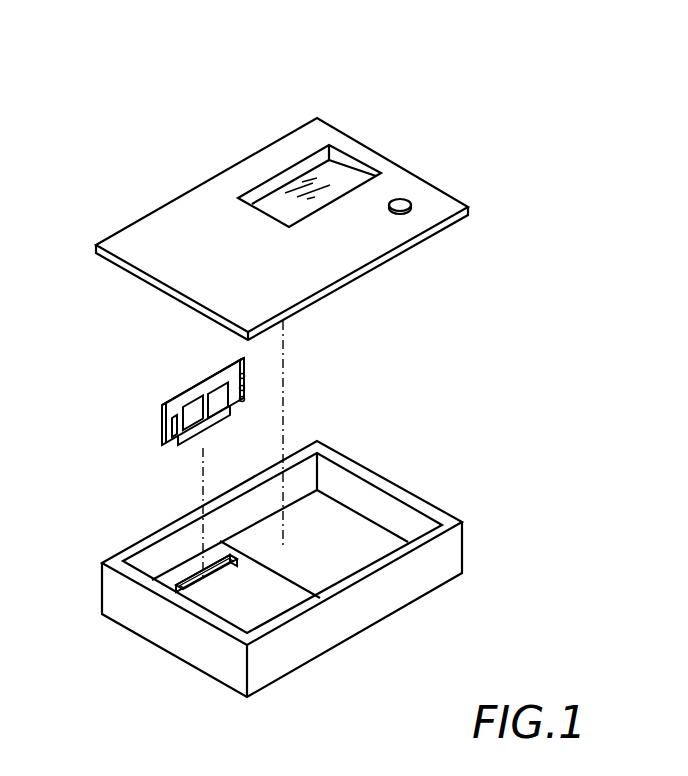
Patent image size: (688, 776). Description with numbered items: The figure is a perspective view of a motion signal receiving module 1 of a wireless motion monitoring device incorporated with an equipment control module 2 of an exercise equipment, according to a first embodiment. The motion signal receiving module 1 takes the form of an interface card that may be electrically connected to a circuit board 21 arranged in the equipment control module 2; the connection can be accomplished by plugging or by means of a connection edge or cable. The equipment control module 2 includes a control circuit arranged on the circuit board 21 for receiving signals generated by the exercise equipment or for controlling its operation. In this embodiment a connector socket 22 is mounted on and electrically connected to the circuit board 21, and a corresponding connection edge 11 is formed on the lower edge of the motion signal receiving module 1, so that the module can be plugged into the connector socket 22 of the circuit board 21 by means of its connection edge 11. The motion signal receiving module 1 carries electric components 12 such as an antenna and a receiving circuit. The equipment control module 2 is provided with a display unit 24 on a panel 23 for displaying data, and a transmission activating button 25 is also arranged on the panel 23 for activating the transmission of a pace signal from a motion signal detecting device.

The motion signal receiving module 1 is at (142, 423).
The connection edge 11 is at (192, 443).
The electric components 12 is at (193, 418).
The equipment control module 2 is at (427, 575).
The circuit board 21 is at (263, 607).
The connector socket 22 is at (177, 585).
The panel 23 is at (147, 240).
The display unit 24 is at (333, 177).
The transmission activating button 25 is at (403, 201).